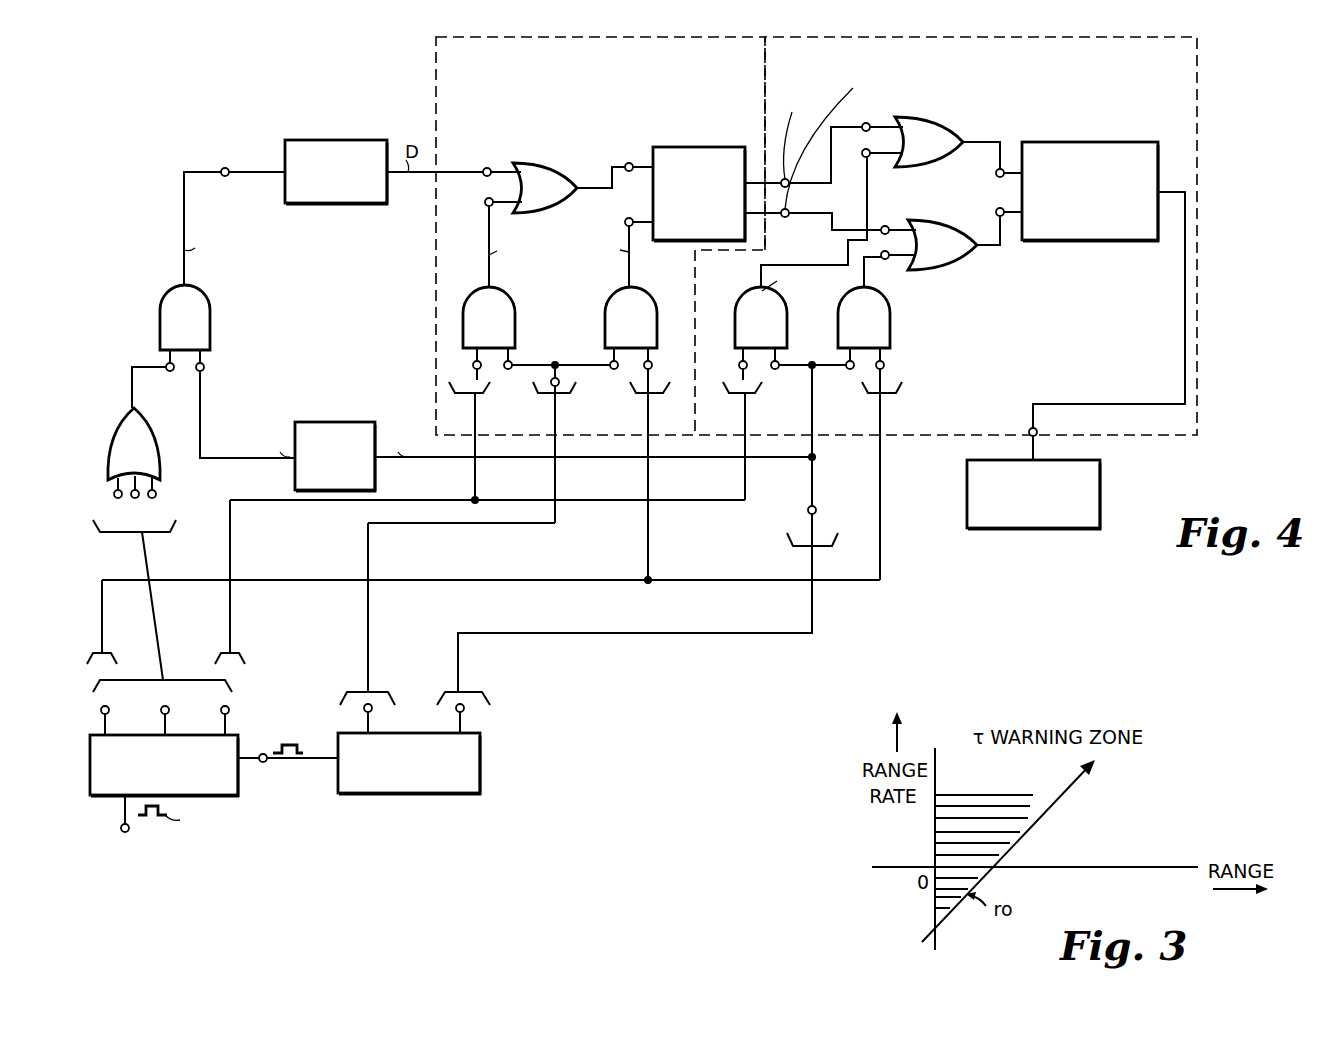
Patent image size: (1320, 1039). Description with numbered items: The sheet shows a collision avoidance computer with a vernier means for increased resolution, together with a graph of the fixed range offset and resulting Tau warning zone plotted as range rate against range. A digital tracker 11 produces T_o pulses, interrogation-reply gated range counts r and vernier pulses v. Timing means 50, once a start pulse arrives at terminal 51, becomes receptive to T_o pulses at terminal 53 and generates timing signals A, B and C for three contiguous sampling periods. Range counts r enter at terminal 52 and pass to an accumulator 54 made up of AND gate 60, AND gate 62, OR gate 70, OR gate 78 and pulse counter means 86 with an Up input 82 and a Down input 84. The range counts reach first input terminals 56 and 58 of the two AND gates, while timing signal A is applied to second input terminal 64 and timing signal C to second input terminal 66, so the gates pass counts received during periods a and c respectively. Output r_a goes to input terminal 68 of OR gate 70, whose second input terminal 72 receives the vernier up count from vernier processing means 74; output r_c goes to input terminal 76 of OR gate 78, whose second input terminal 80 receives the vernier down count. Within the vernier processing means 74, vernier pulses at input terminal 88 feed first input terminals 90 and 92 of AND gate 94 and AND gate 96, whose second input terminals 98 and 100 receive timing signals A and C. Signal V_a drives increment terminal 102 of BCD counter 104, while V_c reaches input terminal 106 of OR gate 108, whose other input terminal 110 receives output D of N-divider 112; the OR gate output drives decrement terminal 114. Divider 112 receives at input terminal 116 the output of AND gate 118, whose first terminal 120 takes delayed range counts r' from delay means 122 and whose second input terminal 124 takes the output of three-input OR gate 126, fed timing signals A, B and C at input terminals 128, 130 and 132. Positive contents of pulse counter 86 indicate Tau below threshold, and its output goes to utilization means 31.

The digital tracker 11 is at (482, 758).
The utilization means 31 is at (1101, 502).
The timing means 50 is at (240, 785).
The start pulse terminal 51 is at (128, 832).
The range count input terminal 52 is at (818, 511).
The T_o pulse terminal 53 is at (263, 754).
The accumulator 54 is at (1185, 67).
The first input terminal of AND gate 60 56 is at (860, 383).
The first input terminal of AND gate 62 58 is at (777, 370).
The first gate means (AND gate) 60 is at (891, 323).
The second gate means (AND gate) 62 is at (788, 324).
The second input terminal of AND gate 60 64 is at (885, 366).
The second input terminal of AND gate 62 66 is at (740, 365).
The input terminal of OR gate 70 68 is at (887, 259).
The third gate means (OR gate) 70 is at (955, 262).
The second input terminal of OR gate 70 72 is at (890, 222).
The vernier processing means 74 is at (726, 88).
The input terminal of OR gate 78 76 is at (885, 226).
The fourth gate means (OR gate) 78 is at (945, 136).
The second input terminal of OR gate 78 80 is at (877, 168).
The Up (increment) input terminal 82 is at (996, 212).
The Down (decrement) input terminal 84 is at (996, 173).
The pulse counter means 86 is at (1066, 243).
The vernier pulse input terminal 88 is at (560, 383).
The first input terminal of AND gate 94 90 is at (611, 362).
The first input terminal of AND gate 96 92 is at (512, 362).
The first gate means of vernier processor (AND gate) 94 is at (609, 299).
The second gate means of vernier processor (AND gate) 96 is at (470, 290).
The second input terminal of AND gate 94 98 is at (652, 365).
The second input terminal of AND gate 96 100 is at (473, 363).
The increment terminal of BCD counter 104 102 is at (625, 222).
The BCD pulse counter means 104 is at (718, 147).
The input terminal of OR gate 108 106 is at (485, 202).
The third gate means of vernier processor (OR gate) 108 is at (540, 165).
The other input terminal of OR gate 108 110 is at (487, 168).
The N-divider 112 is at (342, 140).
The decrement input terminal of BCD counter 104 114 is at (629, 163).
The input terminal of divider 112 116 is at (225, 168).
The AND gate 118 is at (163, 298).
The first terminal of AND gate 118 120 is at (204, 367).
The delay means 122 is at (540, 435).
The second input terminal of AND gate 118 124 is at (166, 365).
The three input OR gate 126 is at (110, 433).
The input terminal of OR gate 126 128 is at (114, 492).
The input terminal of OR gate 126 130 is at (156, 497).
The input terminal of OR gate 126 132 is at (156, 490).